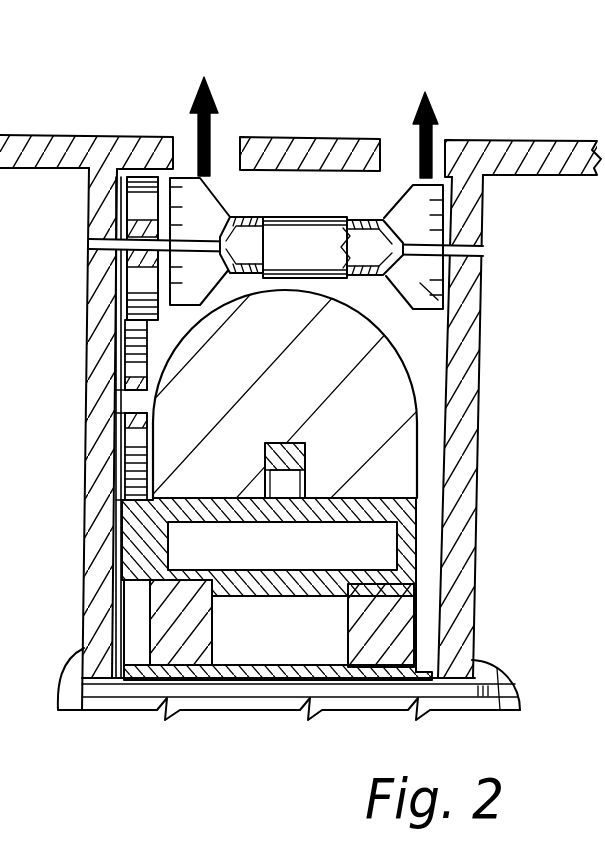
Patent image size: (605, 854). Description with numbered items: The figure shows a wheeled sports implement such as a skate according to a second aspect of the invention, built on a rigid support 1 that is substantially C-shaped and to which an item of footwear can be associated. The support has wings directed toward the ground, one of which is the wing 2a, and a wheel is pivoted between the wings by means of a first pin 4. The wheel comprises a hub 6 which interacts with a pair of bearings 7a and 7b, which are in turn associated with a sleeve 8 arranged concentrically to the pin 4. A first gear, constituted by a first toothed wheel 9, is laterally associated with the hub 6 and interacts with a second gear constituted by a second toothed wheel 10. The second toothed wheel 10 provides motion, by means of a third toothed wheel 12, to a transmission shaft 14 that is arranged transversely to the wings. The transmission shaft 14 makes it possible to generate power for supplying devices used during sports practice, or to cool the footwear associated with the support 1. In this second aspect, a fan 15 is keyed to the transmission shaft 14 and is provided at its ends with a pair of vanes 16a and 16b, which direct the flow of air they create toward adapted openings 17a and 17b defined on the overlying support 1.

The rigid support 1 is at (487, 133).
The wing 2a is at (475, 500).
The first pin 4 is at (230, 700).
The hub 6 is at (412, 540).
The bearing 7a is at (400, 607).
The bearing 7b is at (145, 640).
The sleeve 8 is at (297, 700).
The first toothed wheel 9 is at (104, 498).
The second toothed wheel 10 is at (128, 468).
The third toothed wheel 12 is at (147, 187).
The transmission shaft 14 is at (487, 233).
The fan 15 is at (248, 216).
The vane 16a is at (450, 320).
The vane 16b is at (200, 271).
The opening 17a is at (400, 150).
The opening 17b is at (218, 153).